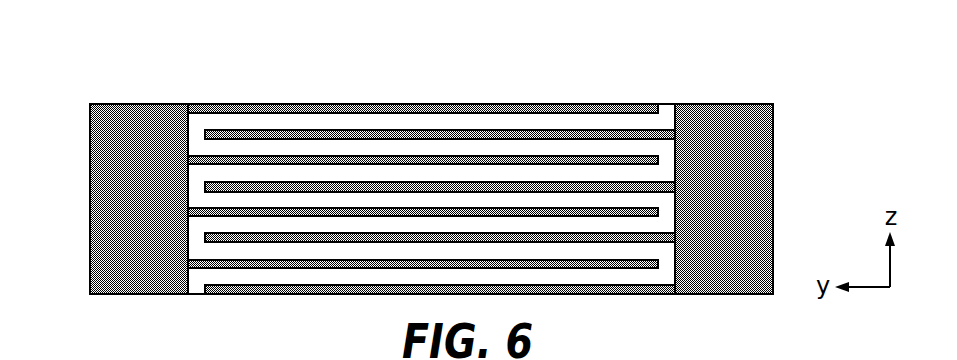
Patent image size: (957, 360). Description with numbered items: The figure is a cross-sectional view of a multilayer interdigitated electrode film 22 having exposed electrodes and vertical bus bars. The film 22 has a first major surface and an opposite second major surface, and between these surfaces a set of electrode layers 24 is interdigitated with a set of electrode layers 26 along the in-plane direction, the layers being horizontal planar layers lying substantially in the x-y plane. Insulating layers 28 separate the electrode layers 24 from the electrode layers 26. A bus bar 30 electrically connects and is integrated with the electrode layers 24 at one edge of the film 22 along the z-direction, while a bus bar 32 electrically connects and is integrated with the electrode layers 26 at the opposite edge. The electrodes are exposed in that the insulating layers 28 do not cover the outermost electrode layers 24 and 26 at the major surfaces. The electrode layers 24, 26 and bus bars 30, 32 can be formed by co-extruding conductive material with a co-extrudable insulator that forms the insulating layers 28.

The multilayer interdigitated electrode film 22 is at (432, 154).
The electrode layers 24 is at (636, 182).
The electrode layers 26 is at (502, 208).
The insulating layers 28 is at (355, 172).
The bus bar 30 is at (773, 193).
The bus bar 32 is at (90, 165).